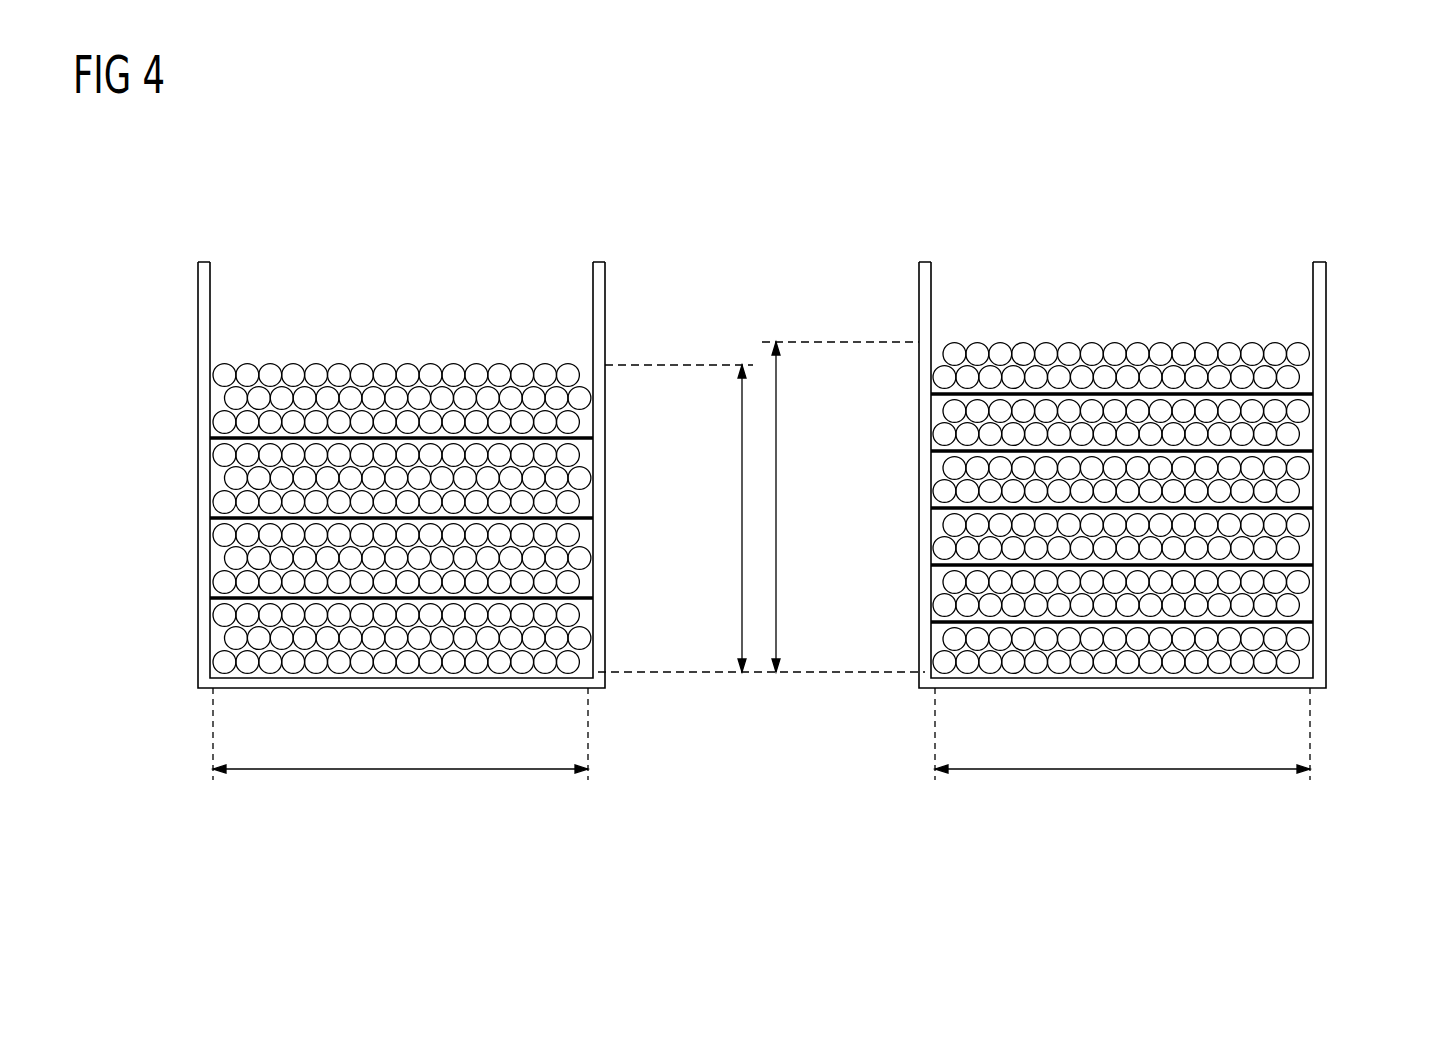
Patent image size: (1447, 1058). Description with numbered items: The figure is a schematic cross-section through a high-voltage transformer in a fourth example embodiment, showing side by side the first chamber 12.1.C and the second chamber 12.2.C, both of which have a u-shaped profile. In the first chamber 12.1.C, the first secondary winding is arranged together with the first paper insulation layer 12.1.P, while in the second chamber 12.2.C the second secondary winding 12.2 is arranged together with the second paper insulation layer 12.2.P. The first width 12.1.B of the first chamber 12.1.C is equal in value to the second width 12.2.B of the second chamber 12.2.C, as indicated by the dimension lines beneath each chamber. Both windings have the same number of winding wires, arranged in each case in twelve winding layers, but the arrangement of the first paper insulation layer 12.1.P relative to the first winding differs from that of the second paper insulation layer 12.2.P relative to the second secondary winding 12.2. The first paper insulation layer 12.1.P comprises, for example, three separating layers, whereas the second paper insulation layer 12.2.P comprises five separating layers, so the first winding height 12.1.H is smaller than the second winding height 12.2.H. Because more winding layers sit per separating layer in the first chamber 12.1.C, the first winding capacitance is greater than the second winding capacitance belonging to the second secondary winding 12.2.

The first chamber 12.1.C is at (198, 317).
The first paper insulation layer 12.1.P is at (212, 437).
The first winding height 12.1.H is at (742, 557).
The first width 12.1.B is at (390, 770).
The second chamber 12.2.C is at (1327, 296).
The second paper insulation layer 12.2.P is at (1308, 394).
The second winding height 12.2.H is at (776, 477).
The second width 12.2.B is at (1110, 770).
The second secondary winding 12.2 is at (1150, 220).